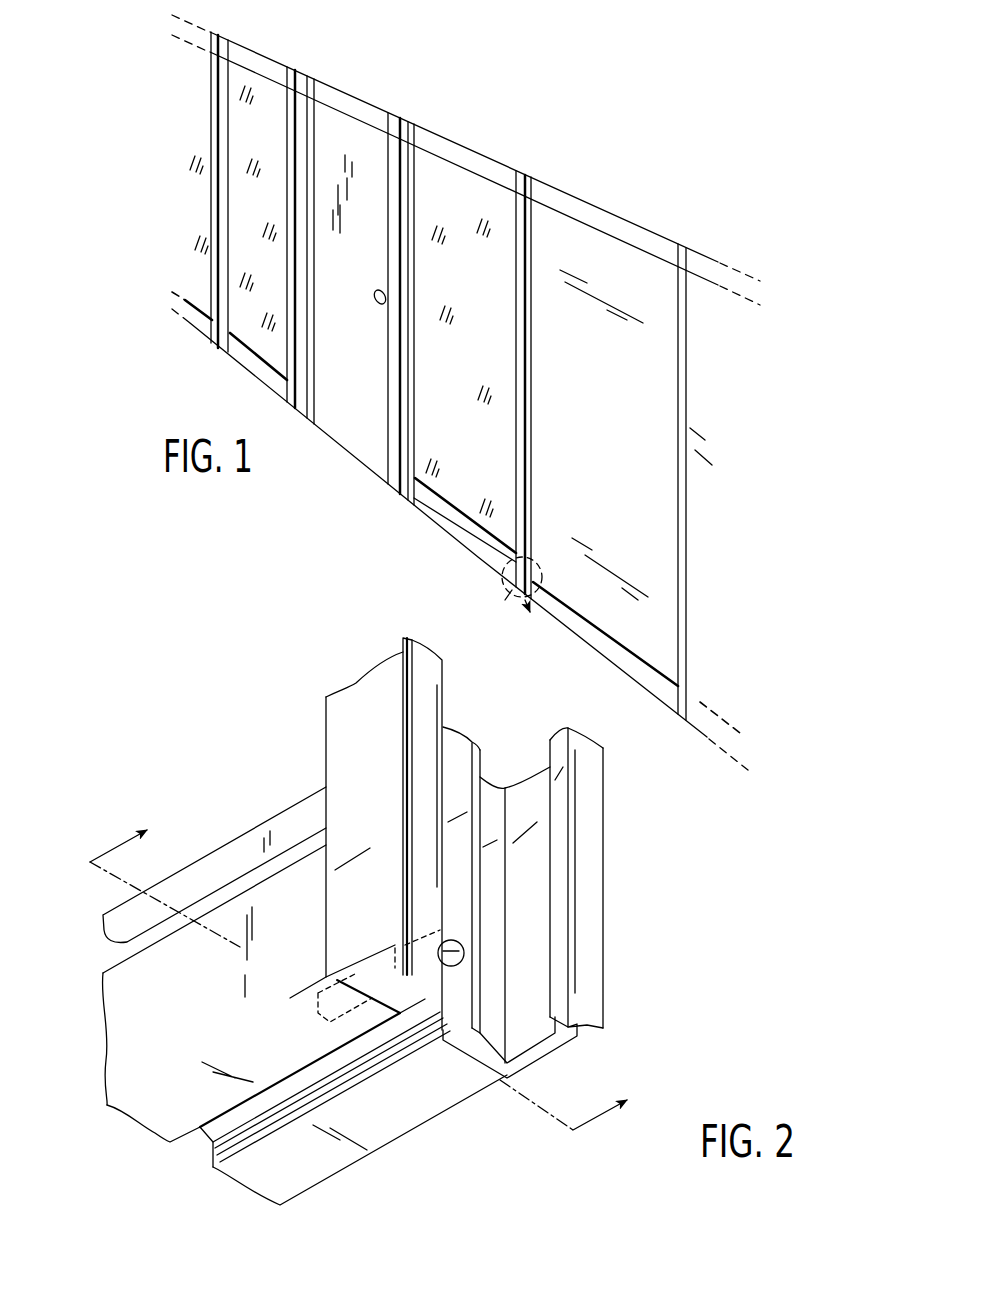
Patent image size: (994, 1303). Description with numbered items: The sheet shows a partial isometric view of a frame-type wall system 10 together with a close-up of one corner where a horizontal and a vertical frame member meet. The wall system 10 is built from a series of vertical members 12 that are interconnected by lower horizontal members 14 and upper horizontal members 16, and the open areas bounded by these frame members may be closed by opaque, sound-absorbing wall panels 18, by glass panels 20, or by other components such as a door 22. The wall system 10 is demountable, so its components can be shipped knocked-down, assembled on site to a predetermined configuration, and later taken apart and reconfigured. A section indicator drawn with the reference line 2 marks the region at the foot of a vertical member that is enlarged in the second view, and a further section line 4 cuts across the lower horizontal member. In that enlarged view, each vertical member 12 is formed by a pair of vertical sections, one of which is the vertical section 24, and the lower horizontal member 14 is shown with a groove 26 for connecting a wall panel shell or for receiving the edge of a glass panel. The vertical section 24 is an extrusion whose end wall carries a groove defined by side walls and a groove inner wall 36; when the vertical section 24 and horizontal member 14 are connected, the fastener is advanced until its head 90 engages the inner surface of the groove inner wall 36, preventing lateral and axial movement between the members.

In FIG. 1, the wall system 10 is at (163, 226).
In FIG. 1, the vertical members 12 is at (206, 107).
In FIG. 1, the lower horizontal members 14 is at (241, 371).
In FIG. 2, the lower horizontal members 14 is at (106, 1014).
In FIG. 1, the upper horizontal members 16 is at (348, 88).
In FIG. 1, the wall panels 18 is at (598, 247).
In FIG. 1, the glass panels 20 is at (267, 97).
In FIG. 1, the door 22 is at (350, 428).
In FIG. 2, the vertical section 24 is at (324, 743).
In FIG. 2, the groove 26 is at (137, 940).
In FIG. 2, the groove inner wall 36 is at (462, 895).
In FIG. 2, the head of fastener 90 is at (465, 968).
In FIG. 1, the line 2— 2 is at (518, 597).
In FIG. 2, the section line 4- 4 is at (367, 971).